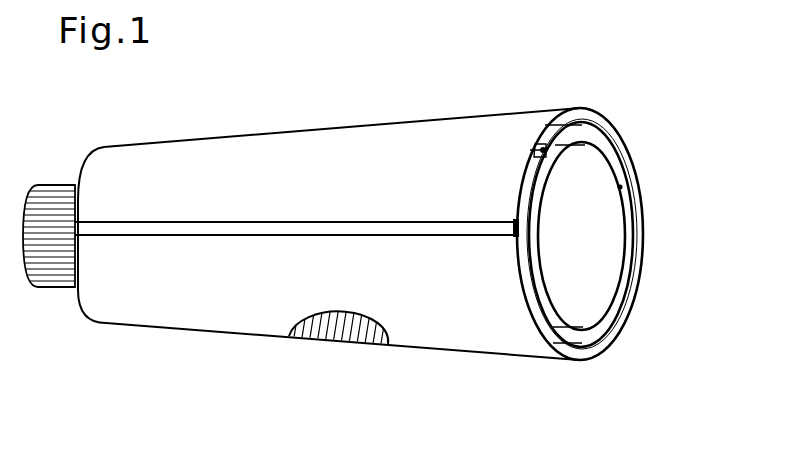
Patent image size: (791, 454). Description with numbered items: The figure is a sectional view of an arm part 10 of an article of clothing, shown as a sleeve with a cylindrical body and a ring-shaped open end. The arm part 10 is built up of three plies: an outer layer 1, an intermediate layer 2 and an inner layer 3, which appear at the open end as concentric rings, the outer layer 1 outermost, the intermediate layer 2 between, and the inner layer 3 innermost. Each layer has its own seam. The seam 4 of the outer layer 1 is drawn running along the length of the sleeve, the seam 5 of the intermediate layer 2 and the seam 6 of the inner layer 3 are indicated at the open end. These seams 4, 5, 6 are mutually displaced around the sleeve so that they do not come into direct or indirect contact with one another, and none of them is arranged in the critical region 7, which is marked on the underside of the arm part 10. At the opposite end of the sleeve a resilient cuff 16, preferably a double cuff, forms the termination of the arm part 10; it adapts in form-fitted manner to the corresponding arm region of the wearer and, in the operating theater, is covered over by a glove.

The arm part 10 is at (258, 126).
The resilient cuff 16 is at (53, 197).
The seam of the outer layer 4 is at (380, 230).
The outer layer 1 is at (587, 107).
The intermediate layer 2 is at (616, 145).
The inner layer 3 is at (618, 278).
The seam of the intermediate layer 5 is at (534, 146).
The seam of the inner layer 6 is at (620, 187).
The critical region 7 is at (340, 341).